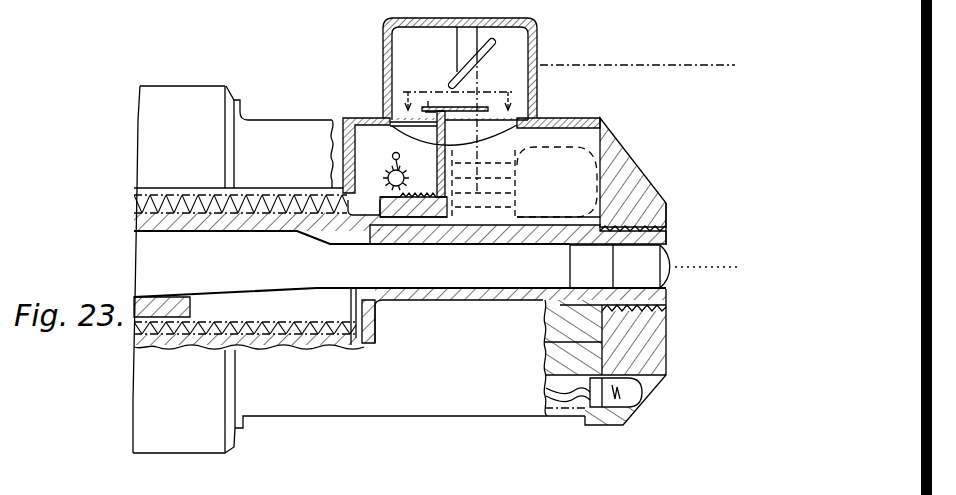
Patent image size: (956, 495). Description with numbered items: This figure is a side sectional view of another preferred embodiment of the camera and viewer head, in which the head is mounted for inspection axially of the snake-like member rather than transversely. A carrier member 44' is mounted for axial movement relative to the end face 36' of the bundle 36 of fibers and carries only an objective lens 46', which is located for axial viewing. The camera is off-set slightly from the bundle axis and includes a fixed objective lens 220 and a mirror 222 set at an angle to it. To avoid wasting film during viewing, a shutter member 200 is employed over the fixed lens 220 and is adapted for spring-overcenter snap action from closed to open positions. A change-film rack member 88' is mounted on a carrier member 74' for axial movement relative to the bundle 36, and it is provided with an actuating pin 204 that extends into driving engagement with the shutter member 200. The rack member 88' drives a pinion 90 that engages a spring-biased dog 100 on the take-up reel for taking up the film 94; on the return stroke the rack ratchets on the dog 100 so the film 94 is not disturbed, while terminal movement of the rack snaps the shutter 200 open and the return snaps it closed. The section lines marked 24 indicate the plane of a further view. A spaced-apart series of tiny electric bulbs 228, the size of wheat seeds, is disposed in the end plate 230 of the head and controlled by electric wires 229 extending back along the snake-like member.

The actuating pin 204 is at (440, 107).
The section line 24 is at (458, 86).
The shutter member 200 is at (453, 107).
The mirror 222 is at (488, 57).
The objective lens 220 is at (552, 114).
The pinion 90 is at (386, 184).
The dog 100 is at (392, 158).
The film 94 is at (527, 184).
The change-film rack member 88' is at (518, 237).
The objective lens 46' is at (644, 249).
The bundle of fibers 36 is at (400, 274).
The end face 36' is at (514, 320).
The carrier member 44' is at (245, 297).
The carrier member 74' is at (250, 366).
The end plate 230 is at (667, 358).
The electric bulbs 228 is at (636, 398).
The electric wires 229 is at (571, 413).